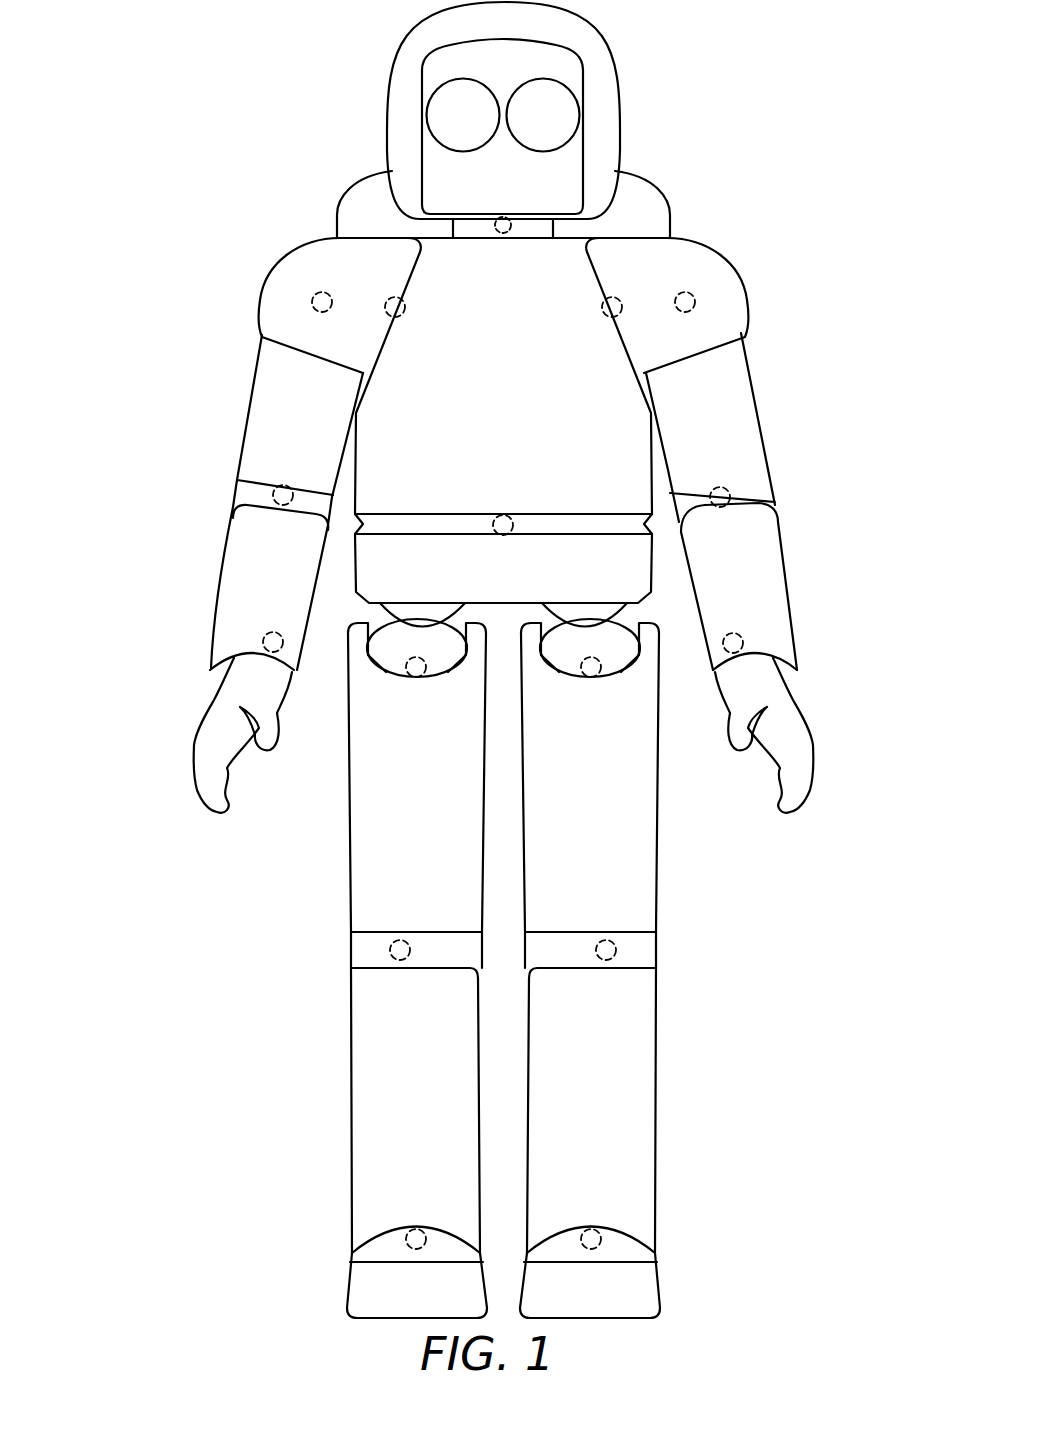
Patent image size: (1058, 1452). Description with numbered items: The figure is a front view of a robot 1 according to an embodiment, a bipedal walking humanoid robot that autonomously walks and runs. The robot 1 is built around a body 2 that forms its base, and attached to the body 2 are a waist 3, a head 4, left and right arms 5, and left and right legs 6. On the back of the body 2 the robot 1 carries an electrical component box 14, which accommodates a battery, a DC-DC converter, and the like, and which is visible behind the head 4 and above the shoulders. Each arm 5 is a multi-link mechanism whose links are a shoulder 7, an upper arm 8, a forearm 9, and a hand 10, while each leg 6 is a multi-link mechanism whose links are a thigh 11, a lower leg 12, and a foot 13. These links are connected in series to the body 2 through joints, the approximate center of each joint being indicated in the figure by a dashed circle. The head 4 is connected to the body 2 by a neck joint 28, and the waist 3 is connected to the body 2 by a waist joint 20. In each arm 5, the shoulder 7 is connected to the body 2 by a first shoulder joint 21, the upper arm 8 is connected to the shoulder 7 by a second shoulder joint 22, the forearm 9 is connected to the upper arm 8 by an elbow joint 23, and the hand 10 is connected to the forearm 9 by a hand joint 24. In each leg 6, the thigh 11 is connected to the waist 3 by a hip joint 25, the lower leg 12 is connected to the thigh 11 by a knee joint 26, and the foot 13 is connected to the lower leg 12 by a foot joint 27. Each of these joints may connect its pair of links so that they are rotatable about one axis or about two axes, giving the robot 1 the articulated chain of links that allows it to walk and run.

The robot 1 is at (238, 126).
The body 2 is at (572, 298).
The waist 3 is at (627, 563).
The head 4 is at (598, 62).
The arm 5 is at (153, 368).
The leg 6 is at (262, 1050).
The shoulder 7 is at (317, 262).
The upper arm 8 is at (270, 363).
The forearm 9 is at (238, 567).
The hand 10 is at (213, 718).
The thigh 11 is at (357, 833).
The lower leg 12 is at (358, 1106).
The foot 13 is at (347, 1287).
The electrical component box 14 is at (640, 192).
The waist joint 20 is at (517, 522).
The first shoulder joint 21 is at (387, 310).
The second shoulder joint 22 is at (314, 297).
The elbow joint 23 is at (268, 492).
The hand joint 24 is at (264, 640).
The hip joint 25 is at (414, 679).
The knee joint 26 is at (389, 950).
The foot joint 27 is at (410, 1230).
The neck joint 28 is at (510, 220).